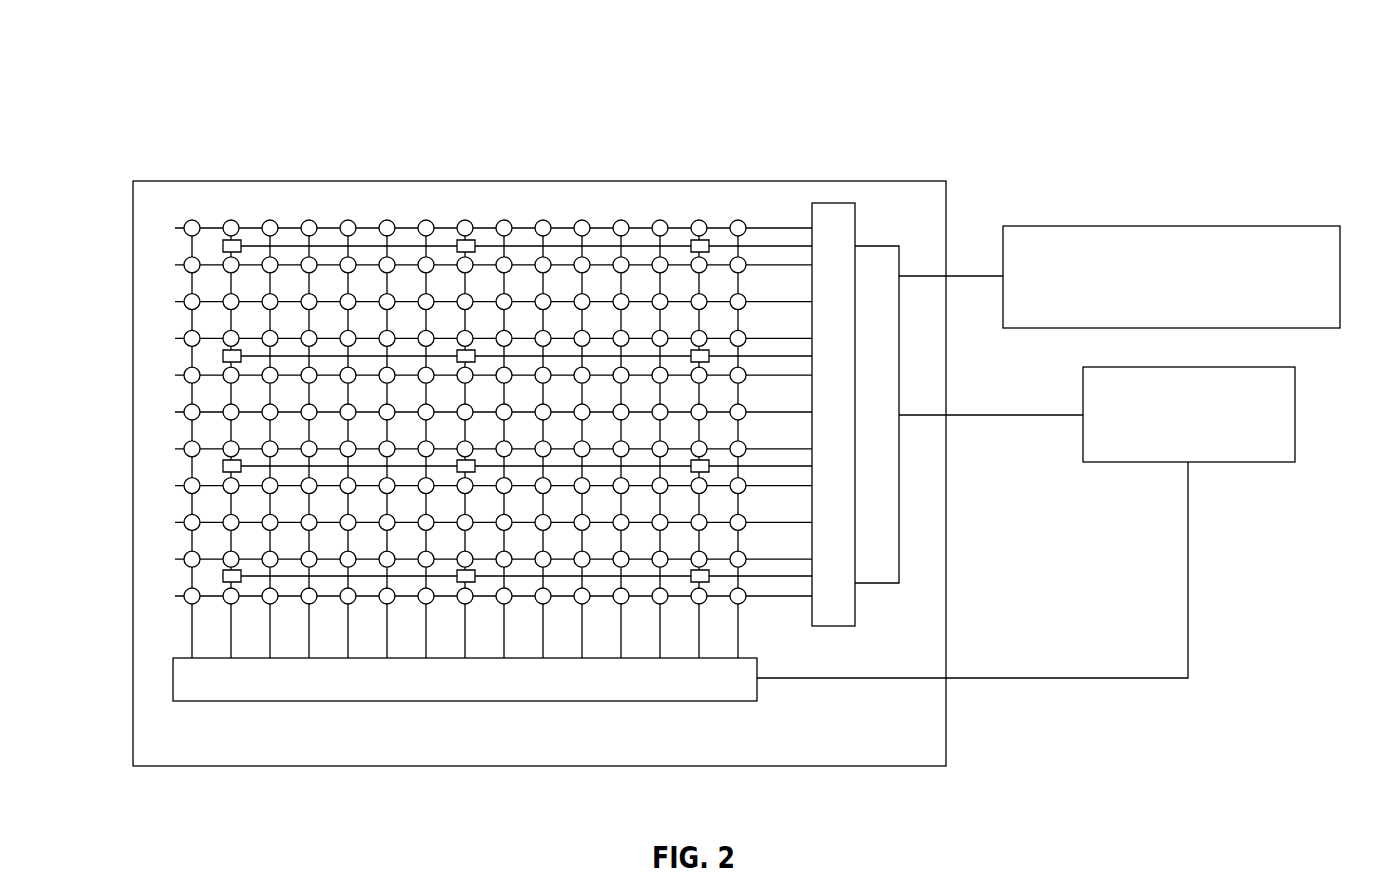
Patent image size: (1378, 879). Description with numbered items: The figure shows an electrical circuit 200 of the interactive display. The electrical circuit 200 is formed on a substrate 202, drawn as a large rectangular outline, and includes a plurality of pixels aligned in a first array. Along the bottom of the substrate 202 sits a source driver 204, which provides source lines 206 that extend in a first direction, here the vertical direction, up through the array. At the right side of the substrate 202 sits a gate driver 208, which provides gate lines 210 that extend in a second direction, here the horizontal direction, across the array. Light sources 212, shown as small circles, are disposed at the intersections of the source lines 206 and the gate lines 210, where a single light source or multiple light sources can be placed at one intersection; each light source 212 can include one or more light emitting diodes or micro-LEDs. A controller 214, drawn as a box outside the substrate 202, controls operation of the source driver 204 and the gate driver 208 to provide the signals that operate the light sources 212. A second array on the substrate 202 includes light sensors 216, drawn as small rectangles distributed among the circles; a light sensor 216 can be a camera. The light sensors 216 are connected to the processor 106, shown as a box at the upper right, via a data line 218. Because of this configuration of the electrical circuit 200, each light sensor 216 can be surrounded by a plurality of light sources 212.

The electrical circuit 200 is at (126, 77).
The substrate 202 is at (332, 181).
The source driver 204 is at (425, 702).
The source lines 206 is at (385, 645).
The gate driver 208 is at (835, 203).
The gate lines 210 is at (762, 522).
The light sources 212 is at (184, 299).
The controller 214 is at (1083, 437).
The light sensors 216 is at (701, 241).
The data line 218 is at (955, 275).
The processor 106 is at (1170, 226).